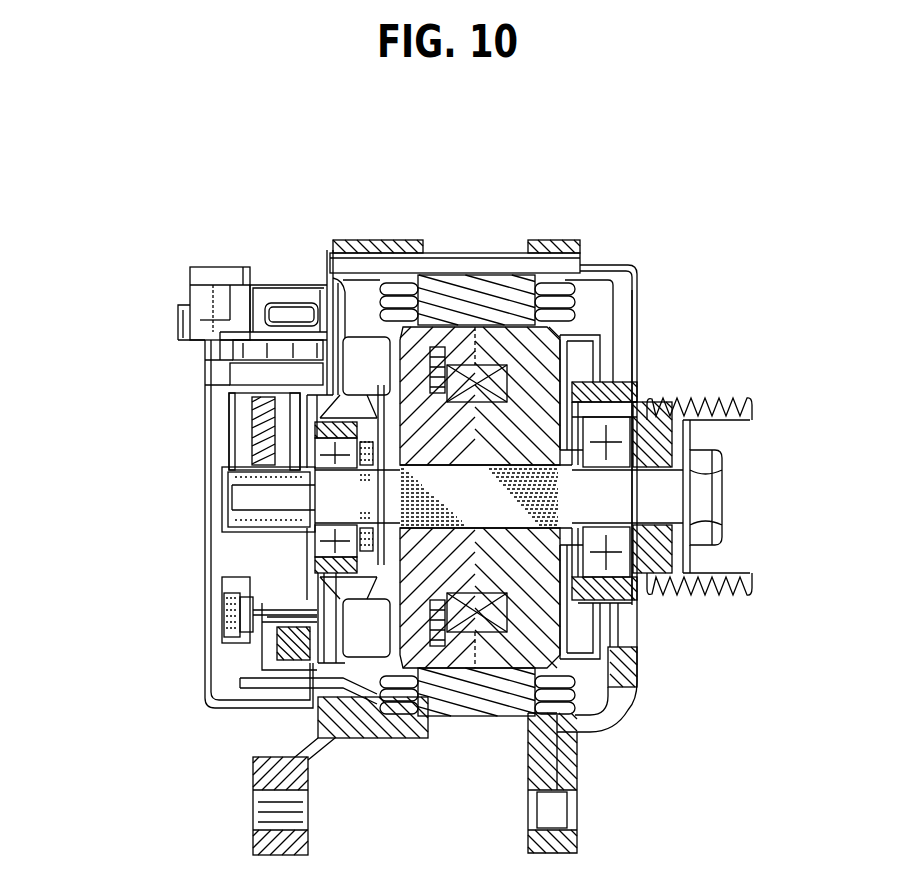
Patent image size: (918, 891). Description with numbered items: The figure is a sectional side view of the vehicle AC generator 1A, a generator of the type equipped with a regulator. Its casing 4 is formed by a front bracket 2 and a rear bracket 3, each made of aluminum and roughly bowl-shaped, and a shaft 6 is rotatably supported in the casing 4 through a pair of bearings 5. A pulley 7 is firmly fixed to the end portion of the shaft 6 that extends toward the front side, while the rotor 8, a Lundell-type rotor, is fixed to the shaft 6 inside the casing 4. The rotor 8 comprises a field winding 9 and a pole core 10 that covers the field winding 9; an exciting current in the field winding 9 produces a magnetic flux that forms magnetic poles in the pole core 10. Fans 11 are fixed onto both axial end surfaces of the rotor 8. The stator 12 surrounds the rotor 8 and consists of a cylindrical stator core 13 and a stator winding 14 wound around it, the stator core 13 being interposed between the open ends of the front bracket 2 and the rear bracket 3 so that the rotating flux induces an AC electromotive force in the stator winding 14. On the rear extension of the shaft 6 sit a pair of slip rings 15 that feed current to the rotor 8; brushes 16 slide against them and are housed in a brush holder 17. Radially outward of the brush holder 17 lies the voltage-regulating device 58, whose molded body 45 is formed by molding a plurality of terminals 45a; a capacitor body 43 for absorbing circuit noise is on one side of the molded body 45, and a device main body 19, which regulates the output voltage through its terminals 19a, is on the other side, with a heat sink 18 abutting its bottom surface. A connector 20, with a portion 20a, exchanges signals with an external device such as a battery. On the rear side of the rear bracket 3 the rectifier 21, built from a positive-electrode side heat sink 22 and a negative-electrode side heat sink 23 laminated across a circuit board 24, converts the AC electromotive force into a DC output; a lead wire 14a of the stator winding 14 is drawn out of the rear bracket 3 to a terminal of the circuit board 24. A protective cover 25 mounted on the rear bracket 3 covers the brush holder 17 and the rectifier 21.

The vehicle AC generator 1A is at (577, 213).
The front bracket 2 is at (637, 312).
The rear bracket 3 is at (372, 262).
The casing 4 is at (638, 262).
The bearings 5 is at (637, 412).
The shaft 6 is at (672, 500).
The pulley 7 is at (705, 405).
The rotor 8 is at (477, 270).
The field winding 9 is at (475, 368).
The pole core 10 is at (490, 365).
The fans 11 is at (573, 373).
The stator 12 is at (477, 742).
The stator core 13 is at (465, 712).
The stator winding 14 is at (550, 717).
The lead wire 14a is at (358, 700).
The slip rings 15 is at (227, 497).
The brushes 16 is at (222, 418).
The brush holder 17 is at (240, 428).
The heat sink 18 is at (213, 375).
The device main body 19 is at (280, 298).
The terminals 19a is at (305, 296).
The connector 20 is at (187, 268).
The connector terminal 20a is at (212, 322).
The rectifier 21 is at (200, 652).
The positive-electrode side heat sink 22 is at (220, 648).
The negative-electrode side heat sink 23 is at (245, 657).
The circuit board 24 is at (189, 702).
The protective cover 25 is at (199, 577).
The capacitor body 43 is at (308, 320).
The molded body 45 is at (217, 357).
The terminals 45a is at (352, 310).
The voltage-regulating device 58 is at (282, 297).